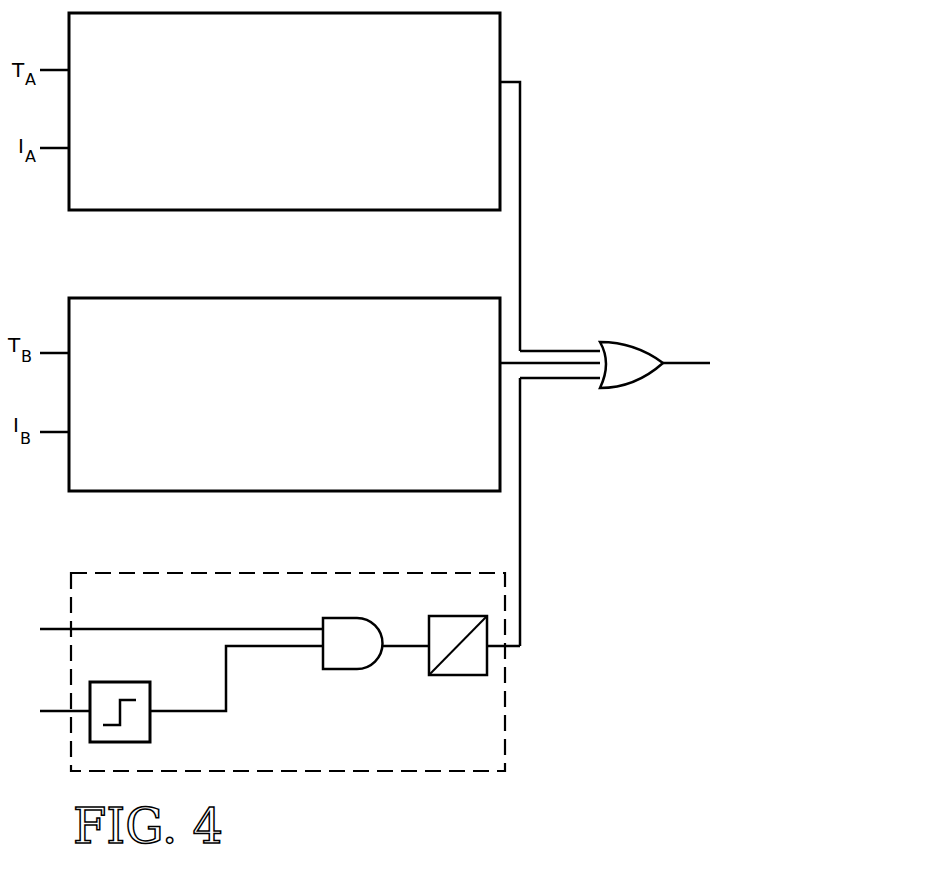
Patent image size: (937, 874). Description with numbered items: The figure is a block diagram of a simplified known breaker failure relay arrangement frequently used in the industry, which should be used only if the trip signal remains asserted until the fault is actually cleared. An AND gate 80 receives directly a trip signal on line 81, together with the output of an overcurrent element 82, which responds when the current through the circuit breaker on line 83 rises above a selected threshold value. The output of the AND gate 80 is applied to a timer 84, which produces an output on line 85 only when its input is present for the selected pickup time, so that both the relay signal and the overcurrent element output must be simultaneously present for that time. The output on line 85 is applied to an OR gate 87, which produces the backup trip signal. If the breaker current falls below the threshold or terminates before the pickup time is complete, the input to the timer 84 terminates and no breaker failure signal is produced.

The AND gate 80 is at (352, 669).
The line 81 is at (50, 628).
The overcurrent element 82 is at (151, 722).
The line 83 is at (50, 711).
The timer 84 is at (458, 675).
The line 85 is at (520, 530).
The OR gate 87 is at (633, 388).